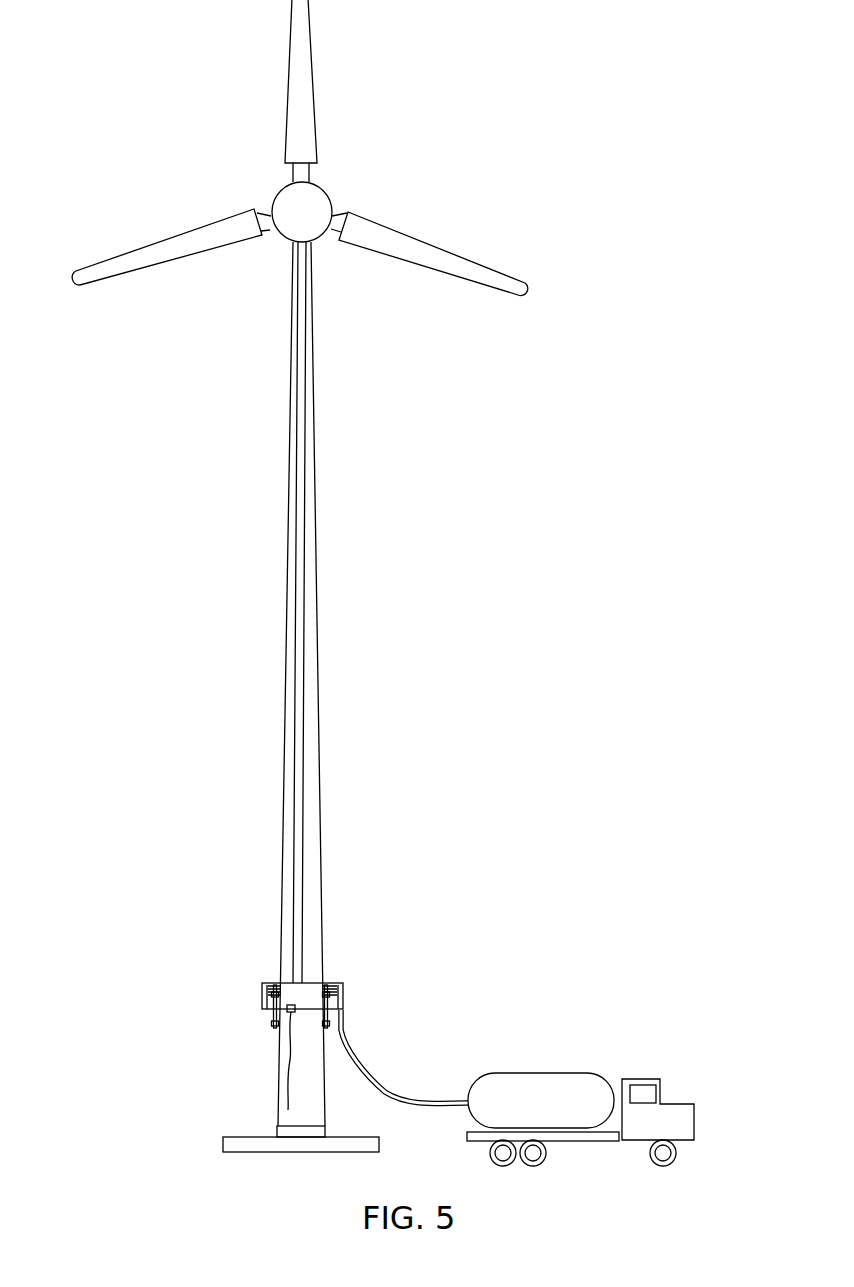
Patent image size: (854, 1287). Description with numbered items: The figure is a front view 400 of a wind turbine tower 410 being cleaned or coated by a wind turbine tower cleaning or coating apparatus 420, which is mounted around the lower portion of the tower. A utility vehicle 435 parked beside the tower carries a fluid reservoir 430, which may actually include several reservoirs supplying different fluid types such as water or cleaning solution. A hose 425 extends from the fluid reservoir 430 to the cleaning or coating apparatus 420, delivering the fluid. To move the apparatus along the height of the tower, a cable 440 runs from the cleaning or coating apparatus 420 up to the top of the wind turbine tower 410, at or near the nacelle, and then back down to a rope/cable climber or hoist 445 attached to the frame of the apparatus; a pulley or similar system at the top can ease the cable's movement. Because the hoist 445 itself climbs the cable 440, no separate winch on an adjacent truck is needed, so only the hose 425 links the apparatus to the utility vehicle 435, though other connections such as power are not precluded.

The front view 400 is at (545, 110).
The wind turbine tower 410 is at (277, 1092).
The wind turbine tower cleaning or coating apparatus 420 is at (262, 993).
The hose 425 is at (380, 1082).
The fluid reservoir 430 is at (503, 1086).
The utility vehicle 435 is at (690, 1106).
The cable 440 is at (302, 880).
The rope/cable climber or hoist 445 is at (291, 1005).